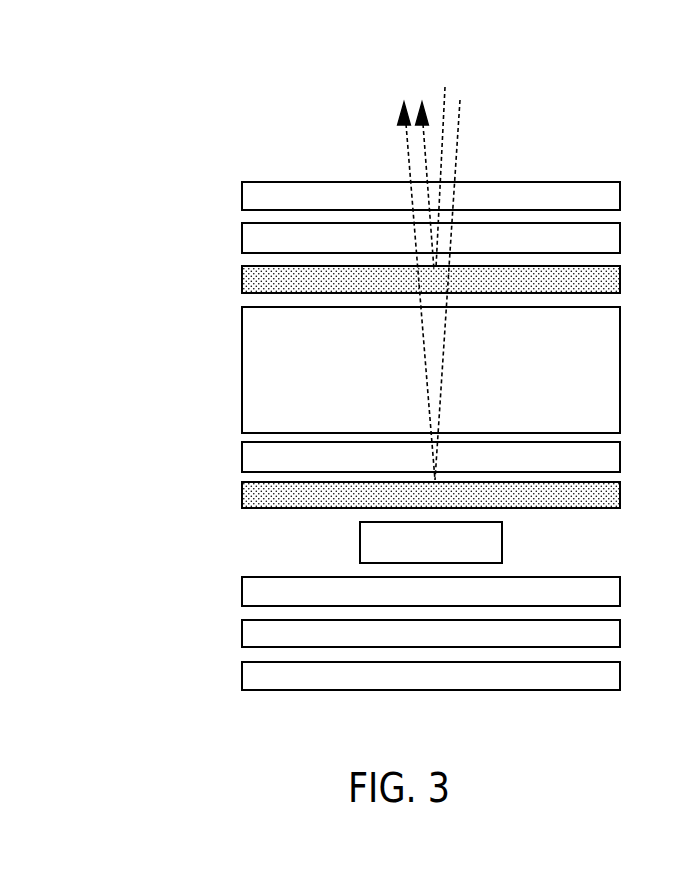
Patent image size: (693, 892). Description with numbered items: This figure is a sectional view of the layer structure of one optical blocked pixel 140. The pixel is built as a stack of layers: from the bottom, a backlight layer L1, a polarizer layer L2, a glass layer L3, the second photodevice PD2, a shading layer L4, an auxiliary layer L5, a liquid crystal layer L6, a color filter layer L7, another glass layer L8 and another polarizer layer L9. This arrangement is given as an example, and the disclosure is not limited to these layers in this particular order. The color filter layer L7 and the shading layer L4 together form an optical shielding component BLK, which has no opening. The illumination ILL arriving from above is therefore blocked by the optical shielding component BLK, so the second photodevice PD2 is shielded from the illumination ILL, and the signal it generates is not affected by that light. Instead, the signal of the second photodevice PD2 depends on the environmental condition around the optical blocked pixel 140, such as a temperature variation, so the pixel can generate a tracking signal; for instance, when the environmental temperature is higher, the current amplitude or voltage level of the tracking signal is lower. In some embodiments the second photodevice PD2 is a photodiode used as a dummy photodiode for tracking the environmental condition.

The optical blocked pixel 140 is at (131, 162).
The polarizer layer L9 is at (230, 183).
The glass layer L8 is at (230, 224).
The color filter layer L7 is at (230, 267).
The liquid crystal layer L6 is at (232, 308).
The auxiliary layer L5 is at (230, 443).
The shading layer L4 is at (230, 483).
The glass layer L3 is at (230, 578).
The polarizer layer L2 is at (230, 621).
The backlight layer L1 is at (230, 663).
The optical shielding component BLK is at (173, 298).
The second photodevice PD2 is at (360, 543).
The illumination ILL is at (458, 140).